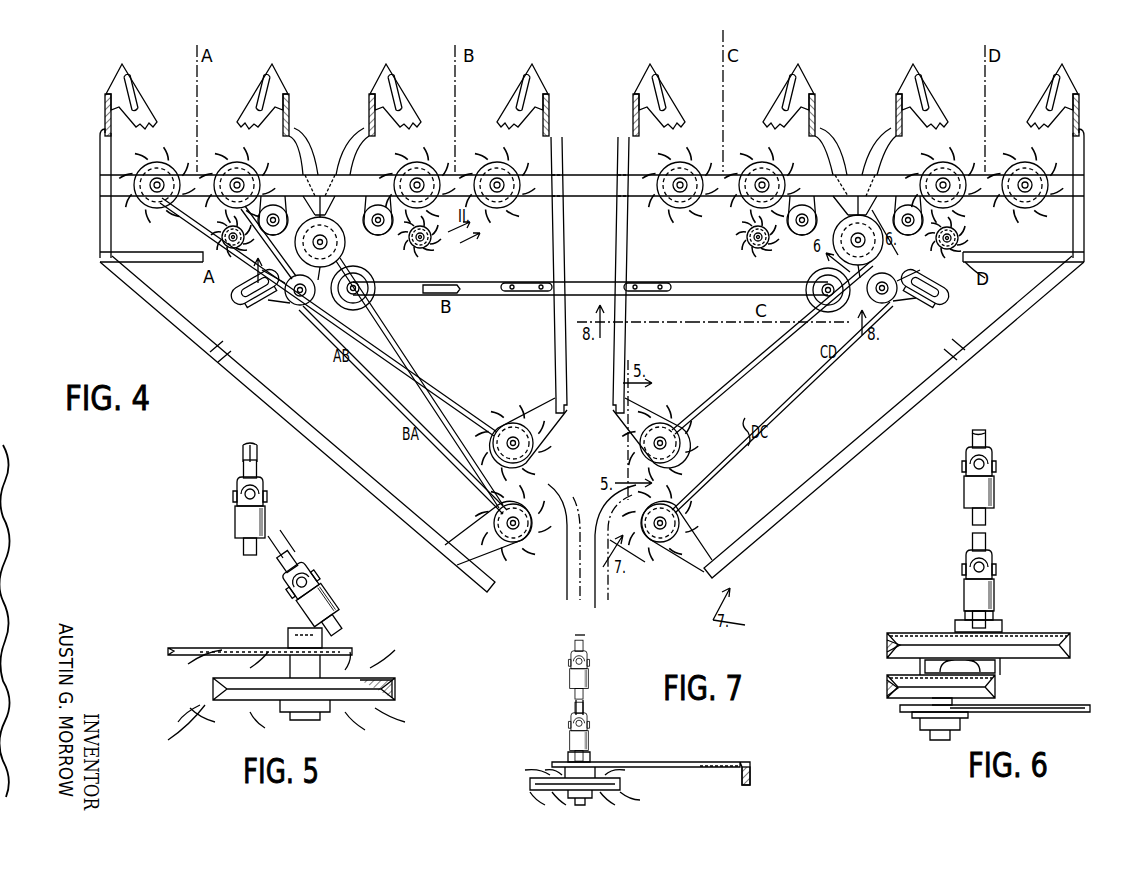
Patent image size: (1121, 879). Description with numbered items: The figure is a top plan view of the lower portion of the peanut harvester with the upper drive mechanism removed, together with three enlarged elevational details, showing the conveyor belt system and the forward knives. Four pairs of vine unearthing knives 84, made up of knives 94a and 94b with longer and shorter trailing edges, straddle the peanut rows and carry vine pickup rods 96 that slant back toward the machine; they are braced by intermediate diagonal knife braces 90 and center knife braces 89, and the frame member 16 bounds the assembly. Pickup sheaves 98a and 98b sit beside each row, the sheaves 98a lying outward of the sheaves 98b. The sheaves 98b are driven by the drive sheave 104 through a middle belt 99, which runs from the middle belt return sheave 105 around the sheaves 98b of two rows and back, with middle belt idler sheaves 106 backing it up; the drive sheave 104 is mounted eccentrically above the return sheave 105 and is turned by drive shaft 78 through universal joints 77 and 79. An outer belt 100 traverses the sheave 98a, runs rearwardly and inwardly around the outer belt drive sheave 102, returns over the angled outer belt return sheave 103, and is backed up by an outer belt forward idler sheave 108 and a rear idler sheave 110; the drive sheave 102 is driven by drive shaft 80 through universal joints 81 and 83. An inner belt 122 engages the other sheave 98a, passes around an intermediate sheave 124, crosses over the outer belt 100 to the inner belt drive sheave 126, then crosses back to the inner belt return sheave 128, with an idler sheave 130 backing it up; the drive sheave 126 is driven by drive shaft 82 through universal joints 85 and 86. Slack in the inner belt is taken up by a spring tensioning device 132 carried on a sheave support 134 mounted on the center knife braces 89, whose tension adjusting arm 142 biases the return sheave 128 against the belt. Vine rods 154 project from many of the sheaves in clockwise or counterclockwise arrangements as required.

In FIG. 4, the frame 16 is at (362, 464).
In FIG. 7, the frame 16 is at (735, 760).
In FIG. 6, the frame 16 is at (995, 719).
In FIG. 6, the universal joint 77 is at (995, 592).
In FIG. 6, the drive shaft 78 is at (990, 445).
In FIG. 6, the universal joint 79 is at (995, 498).
In FIG. 5, the drive shaft 80 is at (243, 470).
In FIG. 5, the universal joint 81 is at (278, 506).
In FIG. 7, the drive shaft 82 is at (588, 652).
In FIG. 5, the universal joint 83 is at (318, 572).
In FIG. 4, the vine unearthing knives 84 is at (606, 88).
In FIG. 7, the universal joint 85 is at (590, 730).
In FIG. 7, the universal joint 86 is at (574, 690).
In FIG. 4, the center knife braces 89 is at (549, 170).
In FIG. 4, the intermediate diagonal knife braces 90 is at (352, 138).
In FIG. 4, the knife 94a is at (277, 92).
In FIG. 4, the knife 94b is at (150, 102).
In FIG. 4, the vine pickup rods 96 is at (140, 100).
In FIG. 4, the pickup sheave 98a is at (135, 192).
In FIG. 4, the pickup sheave 98b is at (230, 205).
In FIG. 4, the middle belt 99 is at (322, 216).
In FIG. 6, the middle belt 99 is at (888, 645).
In FIG. 4, the outer belt 100 is at (203, 258).
In FIG. 5, the outer belt 100 is at (400, 688).
In FIG. 4, the outer belt drive sheave 102 is at (500, 420).
In FIG. 5, the outer belt drive sheave 102 is at (365, 700).
In FIG. 4, the outer belt return sheave 103 is at (245, 294).
In FIG. 4, the drive sheave 104 is at (303, 308).
In FIG. 6, the drive sheave 104 is at (1022, 632).
In FIG. 4, the middle belt return sheave 105 is at (323, 345).
In FIG. 6, the middle belt return sheave 105 is at (995, 690).
In FIG. 4, the middle belt idler sheaves 106 is at (272, 176).
In FIG. 4, the outer belt forward idler sheave 108 is at (222, 250).
In FIG. 4, the rear idler sheave 110 is at (292, 305).
In FIG. 4, the inner belt 122 is at (402, 345).
In FIG. 4, the intermediate sheave 124 is at (388, 320).
In FIG. 4, the inner belt drive sheave 126 is at (510, 546).
In FIG. 7, the inner belt drive sheave 126 is at (548, 780).
In FIG. 4, the inner belt return sheave 128 is at (388, 305).
In FIG. 4, the idler sheave 130 is at (434, 245).
In FIG. 4, the spring tensioning device 132 is at (590, 298).
In FIG. 4, the sheave support 134 is at (578, 278).
In FIG. 4, the tension adjusting arm 142 is at (498, 280).
In FIG. 4, the vine rods 154 is at (150, 208).
In FIG. 5, the vine rods 154 is at (192, 706).